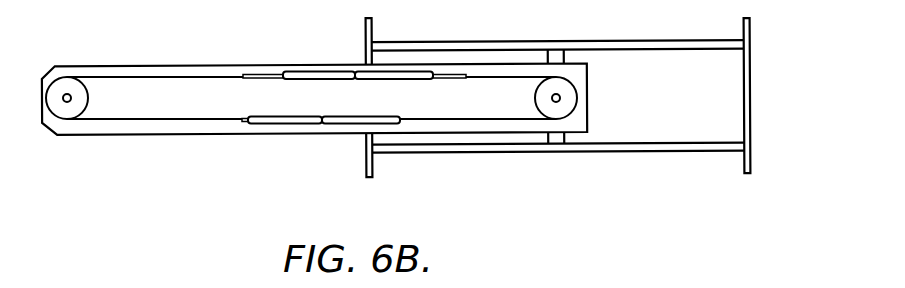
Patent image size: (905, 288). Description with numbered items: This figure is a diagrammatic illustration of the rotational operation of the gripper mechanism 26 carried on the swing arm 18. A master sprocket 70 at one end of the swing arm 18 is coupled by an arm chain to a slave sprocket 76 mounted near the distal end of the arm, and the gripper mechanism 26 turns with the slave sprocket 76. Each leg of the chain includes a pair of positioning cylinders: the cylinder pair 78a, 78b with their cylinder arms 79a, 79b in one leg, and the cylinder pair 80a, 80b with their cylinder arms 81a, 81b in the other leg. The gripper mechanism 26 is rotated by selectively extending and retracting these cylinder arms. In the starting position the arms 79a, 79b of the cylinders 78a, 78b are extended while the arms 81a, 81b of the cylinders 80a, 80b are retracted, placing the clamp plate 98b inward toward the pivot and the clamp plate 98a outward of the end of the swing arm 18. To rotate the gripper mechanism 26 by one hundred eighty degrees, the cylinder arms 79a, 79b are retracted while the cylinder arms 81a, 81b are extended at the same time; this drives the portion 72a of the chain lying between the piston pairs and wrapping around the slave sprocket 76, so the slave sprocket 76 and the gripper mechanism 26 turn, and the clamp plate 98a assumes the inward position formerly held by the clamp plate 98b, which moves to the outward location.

The swing arm 18 is at (172, 63).
The gripper mechanism 26 is at (588, 41).
The master sprocket 70 is at (63, 119).
The slave sprocket 76 is at (577, 98).
The portion of the chain 72a is at (525, 118).
The positioning cylinder 78a is at (297, 117).
The positioning cylinder 78b is at (343, 117).
The cylinder arm 79a is at (286, 104).
The cylinder arm 79b is at (384, 137).
The positioning cylinder 80a is at (323, 70).
The positioning cylinder 80b is at (399, 80).
The cylinder arm 81a is at (248, 79).
The cylinder arm 81b is at (452, 79).
The clamp plate 98a is at (365, 161).
The clamp plate 98b is at (751, 157).